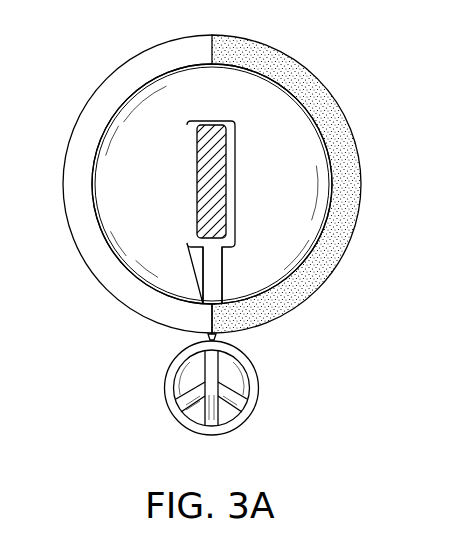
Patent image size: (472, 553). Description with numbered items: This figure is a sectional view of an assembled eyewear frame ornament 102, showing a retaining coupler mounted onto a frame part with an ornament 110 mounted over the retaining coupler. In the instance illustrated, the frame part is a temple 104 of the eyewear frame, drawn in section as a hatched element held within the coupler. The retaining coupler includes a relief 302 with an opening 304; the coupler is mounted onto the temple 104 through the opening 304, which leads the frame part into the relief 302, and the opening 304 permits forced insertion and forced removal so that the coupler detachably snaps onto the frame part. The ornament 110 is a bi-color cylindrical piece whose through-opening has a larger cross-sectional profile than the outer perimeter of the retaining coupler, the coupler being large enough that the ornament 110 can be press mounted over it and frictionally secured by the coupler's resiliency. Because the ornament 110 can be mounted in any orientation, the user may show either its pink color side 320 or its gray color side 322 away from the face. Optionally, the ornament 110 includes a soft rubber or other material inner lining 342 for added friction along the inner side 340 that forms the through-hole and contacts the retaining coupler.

The assembled eyewear frame ornament 102 is at (227, 254).
The temple 104 is at (219, 175).
The ornament 110 is at (227, 210).
The relief 302 is at (211, 212).
The opening 304 is at (204, 275).
The pink color side 320 is at (312, 82).
The gray color side 322 is at (102, 98).
The inner side 340 is at (150, 282).
The inner lining 342 is at (102, 223).